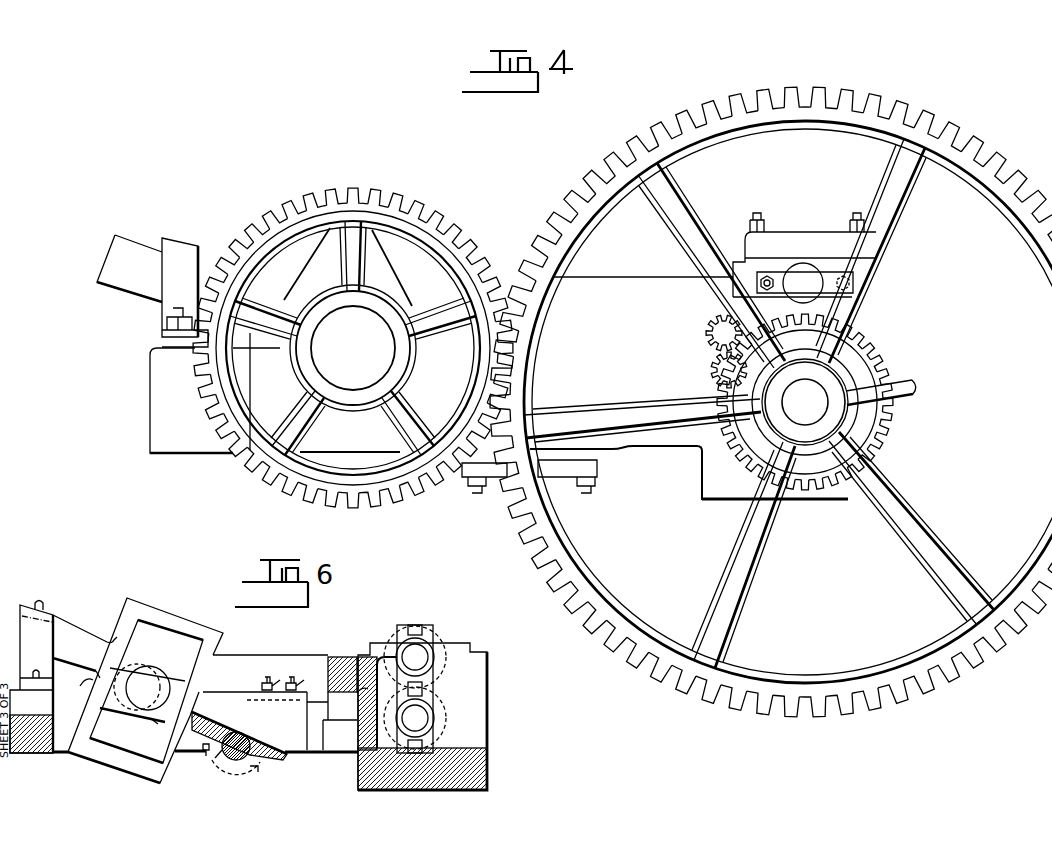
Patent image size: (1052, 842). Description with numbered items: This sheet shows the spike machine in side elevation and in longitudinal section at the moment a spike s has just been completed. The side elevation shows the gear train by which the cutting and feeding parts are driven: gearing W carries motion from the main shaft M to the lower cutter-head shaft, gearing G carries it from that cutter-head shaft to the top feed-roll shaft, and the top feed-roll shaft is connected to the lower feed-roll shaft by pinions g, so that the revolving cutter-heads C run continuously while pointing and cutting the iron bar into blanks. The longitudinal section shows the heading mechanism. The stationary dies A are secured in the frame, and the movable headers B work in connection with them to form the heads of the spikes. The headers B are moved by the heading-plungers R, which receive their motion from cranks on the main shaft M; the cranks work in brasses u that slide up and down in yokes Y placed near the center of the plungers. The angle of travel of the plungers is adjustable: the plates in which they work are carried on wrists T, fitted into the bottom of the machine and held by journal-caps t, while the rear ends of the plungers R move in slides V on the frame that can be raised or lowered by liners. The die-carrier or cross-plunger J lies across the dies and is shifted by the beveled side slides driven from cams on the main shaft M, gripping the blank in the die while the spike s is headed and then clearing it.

In FIG. 4, the slides V is at (152, 291).
In FIG. 6, the slides V is at (63, 677).
In FIG. 4, the gearing W is at (514, 228).
In FIG. 4, the gearing G is at (804, 402).
In FIG. 4, the pinions g is at (722, 353).
In FIG. 4, the wrist T is at (655, 473).
In FIG. 6, the wrist T is at (240, 748).
In FIG. 6, the yokes Y is at (145, 690).
In FIG. 6, the main shaft M is at (142, 687).
In FIG. 6, the movable headers B is at (280, 702).
In FIG. 6, the die-carrier J is at (340, 665).
In FIG. 6, the heading-plungers R is at (239, 733).
In FIG. 6, the stationary dies A is at (343, 720).
In FIG. 6, the cutter-heads C is at (415, 689).
In FIG. 6, the journal-caps t is at (215, 758).
In FIG. 6, the brasses u is at (155, 722).
In FIG. 6, the spike s is at (368, 682).
In FIG. 6, the pin r is at (223, 644).